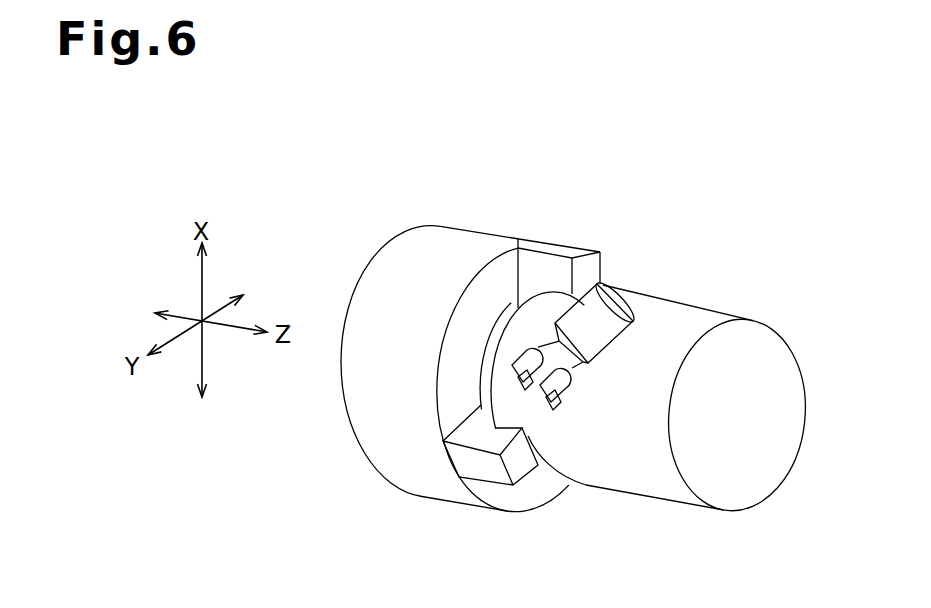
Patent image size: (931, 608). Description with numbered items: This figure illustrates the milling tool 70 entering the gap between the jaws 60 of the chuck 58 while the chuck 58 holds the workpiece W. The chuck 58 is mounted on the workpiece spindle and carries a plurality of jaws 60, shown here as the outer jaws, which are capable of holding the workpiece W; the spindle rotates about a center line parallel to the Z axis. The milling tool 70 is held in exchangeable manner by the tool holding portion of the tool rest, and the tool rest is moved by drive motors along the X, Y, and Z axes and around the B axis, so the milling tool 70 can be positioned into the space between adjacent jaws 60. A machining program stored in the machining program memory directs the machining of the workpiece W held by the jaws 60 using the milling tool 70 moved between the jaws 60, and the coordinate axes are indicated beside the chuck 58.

The chuck 58 is at (482, 242).
The jaws 60 is at (568, 252).
The workpiece W is at (699, 314).
The milling tool 70 is at (600, 340).